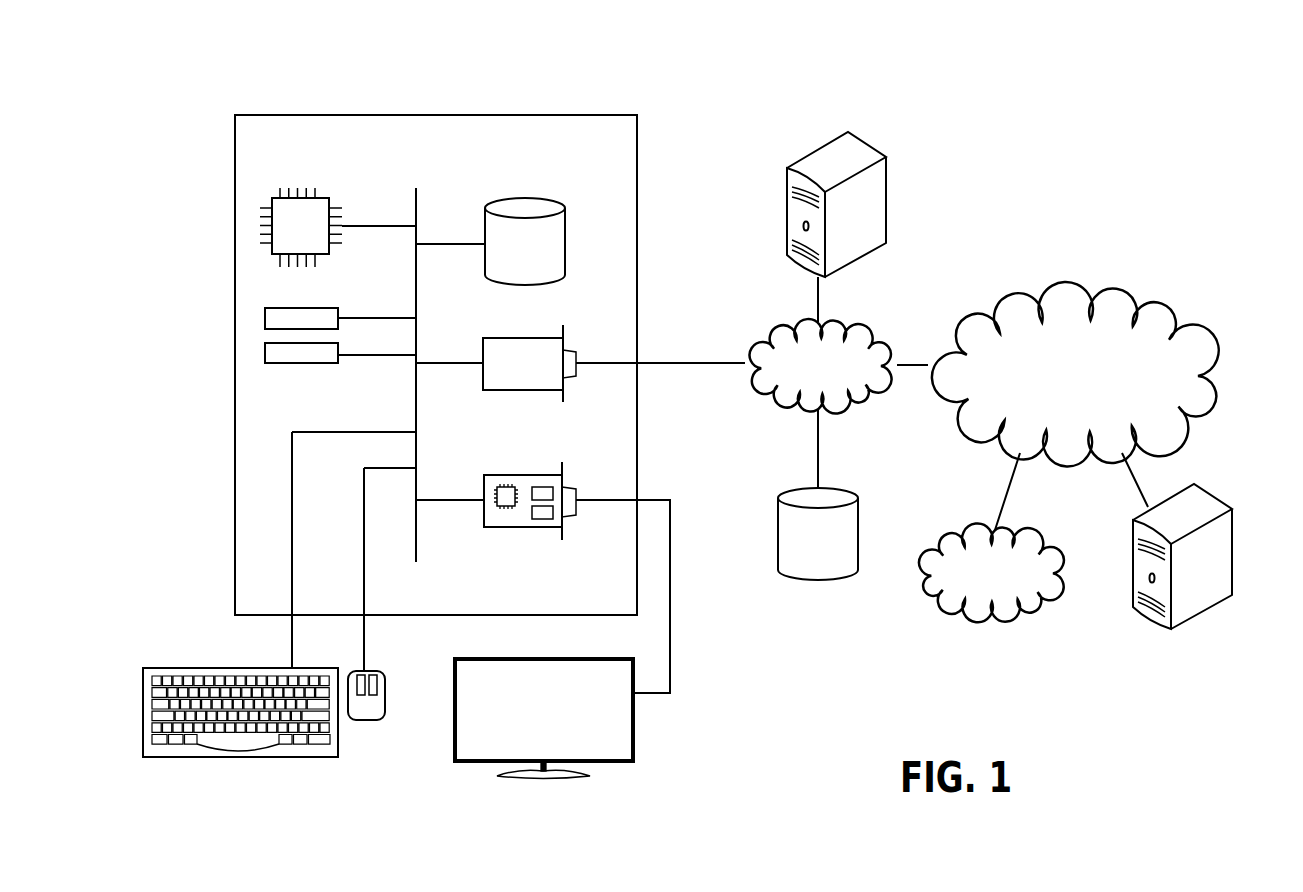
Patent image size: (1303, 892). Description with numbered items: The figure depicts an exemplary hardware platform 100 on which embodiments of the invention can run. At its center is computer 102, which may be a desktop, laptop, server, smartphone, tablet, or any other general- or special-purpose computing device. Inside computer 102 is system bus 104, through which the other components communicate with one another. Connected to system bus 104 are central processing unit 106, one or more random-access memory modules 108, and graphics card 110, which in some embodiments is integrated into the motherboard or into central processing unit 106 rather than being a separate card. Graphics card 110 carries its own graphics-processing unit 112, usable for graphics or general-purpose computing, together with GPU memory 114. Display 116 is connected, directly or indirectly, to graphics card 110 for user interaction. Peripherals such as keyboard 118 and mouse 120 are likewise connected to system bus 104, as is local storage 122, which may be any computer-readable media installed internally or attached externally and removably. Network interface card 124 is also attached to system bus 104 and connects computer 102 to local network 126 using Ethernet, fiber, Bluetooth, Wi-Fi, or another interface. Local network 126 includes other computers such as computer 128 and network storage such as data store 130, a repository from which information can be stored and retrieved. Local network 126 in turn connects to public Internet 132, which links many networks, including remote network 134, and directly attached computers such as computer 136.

The computing system 100 is at (1160, 123).
The computer 102 is at (592, 114).
The system bus 104 is at (418, 198).
The central processing unit 106 is at (323, 197).
The random-access memory modules 108 is at (338, 348).
The graphics card 110 is at (543, 562).
The graphics-processing unit 112 is at (505, 506).
The GPU memory 114 is at (540, 515).
The display 116 is at (637, 745).
The keyboard 118 is at (243, 758).
The mouse 120 is at (365, 722).
The local storage 122 is at (565, 228).
The network interface card 124 is at (483, 348).
The local network 126 is at (872, 324).
The computer 128 is at (870, 145).
The data store 130 is at (852, 490).
The public Internet 132 is at (1120, 290).
The remote network 134 is at (1040, 530).
The computer 136 is at (1210, 490).